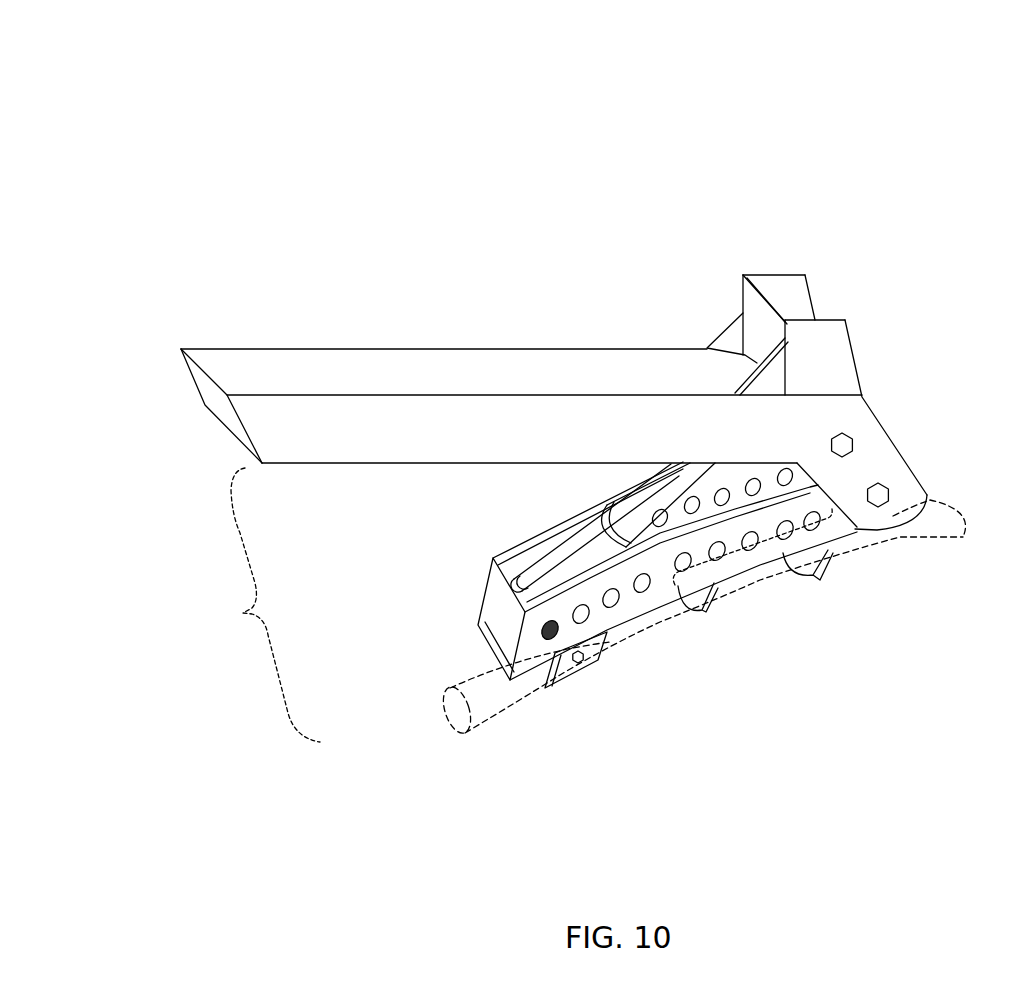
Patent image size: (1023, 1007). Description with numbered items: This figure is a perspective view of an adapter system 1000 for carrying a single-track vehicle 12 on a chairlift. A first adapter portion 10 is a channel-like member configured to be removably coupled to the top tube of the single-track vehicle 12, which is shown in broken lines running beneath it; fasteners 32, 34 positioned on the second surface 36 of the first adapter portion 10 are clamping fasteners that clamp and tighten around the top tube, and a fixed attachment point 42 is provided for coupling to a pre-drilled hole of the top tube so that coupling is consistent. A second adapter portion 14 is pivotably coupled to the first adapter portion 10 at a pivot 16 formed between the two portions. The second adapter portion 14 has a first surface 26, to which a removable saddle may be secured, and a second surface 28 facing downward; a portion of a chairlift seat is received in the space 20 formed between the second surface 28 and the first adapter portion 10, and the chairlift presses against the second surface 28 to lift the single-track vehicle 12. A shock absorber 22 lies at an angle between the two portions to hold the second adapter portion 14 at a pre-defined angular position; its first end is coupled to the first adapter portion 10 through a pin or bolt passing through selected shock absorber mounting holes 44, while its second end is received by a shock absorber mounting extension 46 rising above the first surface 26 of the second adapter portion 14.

The bracket assembly 1000 is at (71, 50).
The first surface 26 is at (497, 305).
The second surface 28 is at (490, 490).
The shock absorber mounting extension 46 is at (818, 320).
The second adapter portion 14 is at (872, 407).
The pivot 16 is at (920, 452).
The first adapter portion 10 is at (488, 640).
The shock absorber 22 is at (552, 533).
The shock absorber mounting holes 44 is at (577, 673).
The fastener 32 is at (693, 613).
The fastener 34 is at (810, 583).
The fixed attachment point 42 is at (729, 586).
The second surface 36 is at (495, 690).
The single-track vehicle 12 is at (447, 690).
The space 20 is at (255, 605).